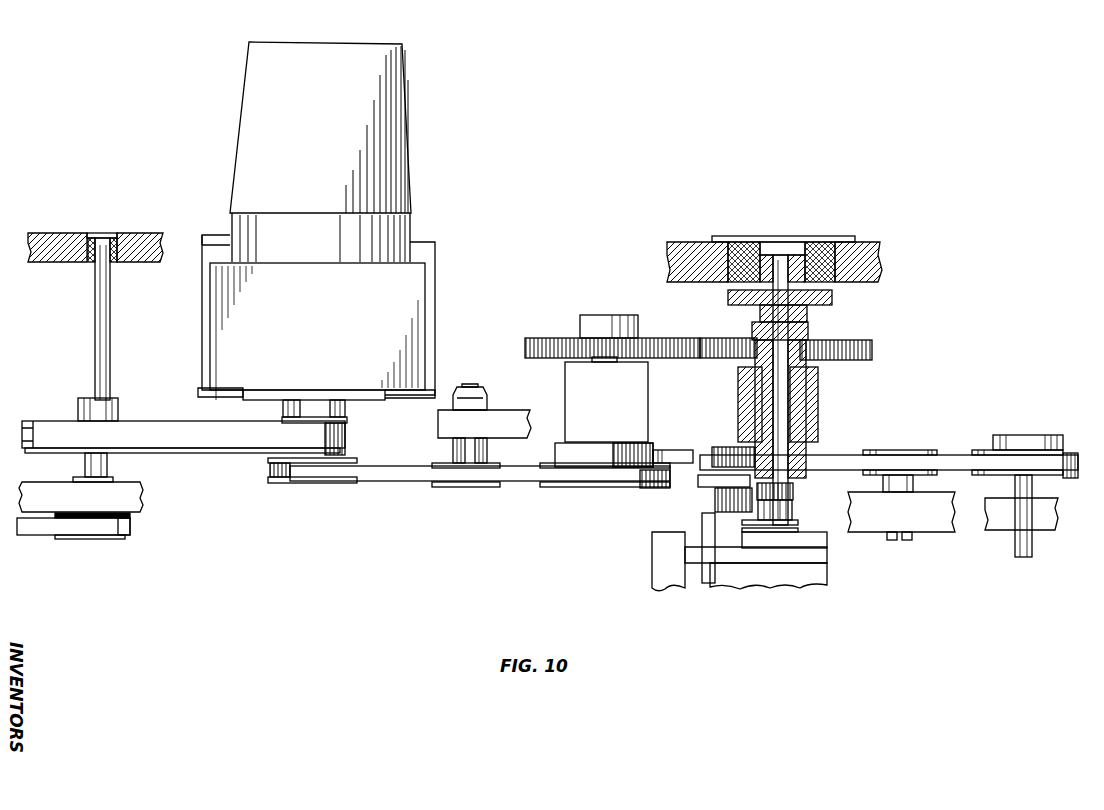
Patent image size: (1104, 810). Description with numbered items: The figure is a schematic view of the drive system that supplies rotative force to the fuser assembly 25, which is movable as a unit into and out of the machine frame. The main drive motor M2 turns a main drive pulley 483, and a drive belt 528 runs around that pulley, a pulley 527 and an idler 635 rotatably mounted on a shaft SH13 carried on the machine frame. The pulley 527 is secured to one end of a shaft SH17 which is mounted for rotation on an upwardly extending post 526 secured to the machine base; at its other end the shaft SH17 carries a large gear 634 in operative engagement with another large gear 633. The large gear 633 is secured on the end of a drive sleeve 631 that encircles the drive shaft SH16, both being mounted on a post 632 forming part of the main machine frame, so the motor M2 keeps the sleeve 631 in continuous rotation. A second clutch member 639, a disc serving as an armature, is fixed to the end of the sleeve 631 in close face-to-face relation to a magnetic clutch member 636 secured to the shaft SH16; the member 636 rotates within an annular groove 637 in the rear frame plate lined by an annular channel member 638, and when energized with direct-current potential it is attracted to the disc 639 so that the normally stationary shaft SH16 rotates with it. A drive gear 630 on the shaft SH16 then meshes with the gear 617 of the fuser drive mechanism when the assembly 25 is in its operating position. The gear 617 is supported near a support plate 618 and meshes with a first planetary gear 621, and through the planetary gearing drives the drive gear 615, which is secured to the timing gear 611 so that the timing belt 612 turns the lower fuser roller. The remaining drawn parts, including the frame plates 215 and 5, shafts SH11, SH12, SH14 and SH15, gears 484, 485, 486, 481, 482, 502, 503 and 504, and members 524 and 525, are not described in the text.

The frame plate 215 is at (104, 234).
The shaft SH11 is at (95, 333).
The collar 485 is at (122, 419).
The gear 484 is at (242, 453).
The frame plate 5 is at (143, 498).
The plate 486 is at (105, 540).
The main drive motor M2 is at (407, 90).
The gear housing bracket 481 is at (430, 287).
The pinion 482 is at (347, 425).
The main drive pulley 483 is at (318, 484).
The shaft SH12 is at (285, 480).
The drive belt 528 is at (408, 481).
The shaft SH13 is at (453, 455).
The block 525 is at (550, 440).
The idler 635 is at (440, 488).
The pulley 527 is at (590, 488).
The shaft 524 is at (685, 440).
The post 526 is at (648, 410).
The shaft SH17 is at (622, 360).
The large gear 634 is at (540, 337).
The large gear 633 is at (718, 340).
The annular groove 637 is at (850, 236).
The annular channel member 638 is at (812, 242).
The magnetic clutch member 636 is at (840, 282).
The second clutch member 639 is at (728, 296).
The drive sleeve 631 is at (812, 368).
The drive shaft SH16 is at (790, 395).
The post 632 is at (818, 410).
The support plate 618 is at (698, 475).
The first planetary gear 621 is at (710, 500).
The gear 617 is at (794, 490).
The drive gear 630 is at (793, 508).
The drive gear 615 is at (803, 523).
The timing belt 612 is at (827, 548).
The timing gear 611 is at (827, 568).
The shaft bar 503 is at (950, 455).
The gear 504 is at (840, 450).
The gear 502 is at (1068, 428).
The shaft SH15 is at (900, 542).
The shaft SH14 is at (1022, 557).
The fuser assembly 25 is at (632, 577).